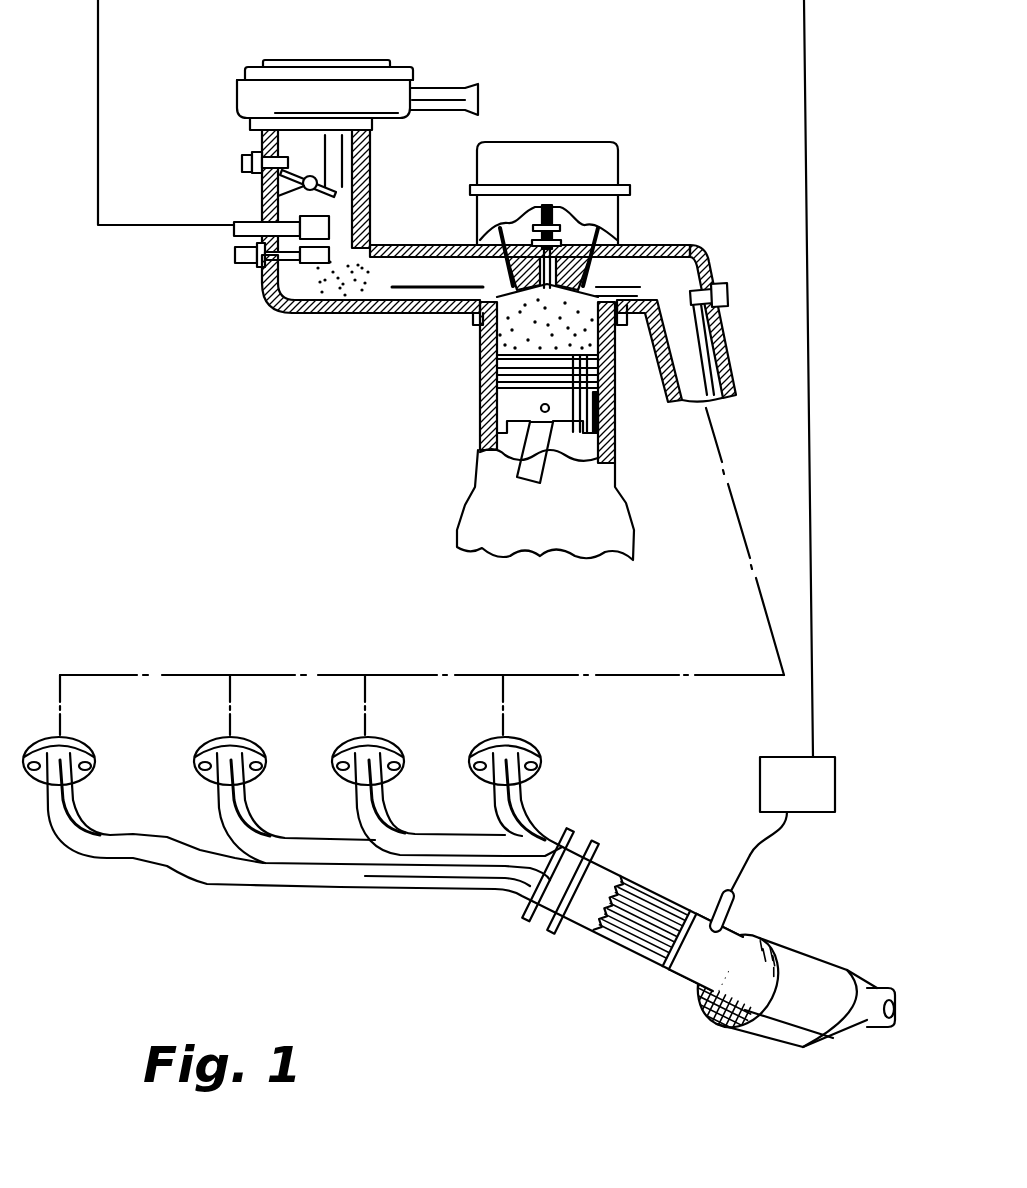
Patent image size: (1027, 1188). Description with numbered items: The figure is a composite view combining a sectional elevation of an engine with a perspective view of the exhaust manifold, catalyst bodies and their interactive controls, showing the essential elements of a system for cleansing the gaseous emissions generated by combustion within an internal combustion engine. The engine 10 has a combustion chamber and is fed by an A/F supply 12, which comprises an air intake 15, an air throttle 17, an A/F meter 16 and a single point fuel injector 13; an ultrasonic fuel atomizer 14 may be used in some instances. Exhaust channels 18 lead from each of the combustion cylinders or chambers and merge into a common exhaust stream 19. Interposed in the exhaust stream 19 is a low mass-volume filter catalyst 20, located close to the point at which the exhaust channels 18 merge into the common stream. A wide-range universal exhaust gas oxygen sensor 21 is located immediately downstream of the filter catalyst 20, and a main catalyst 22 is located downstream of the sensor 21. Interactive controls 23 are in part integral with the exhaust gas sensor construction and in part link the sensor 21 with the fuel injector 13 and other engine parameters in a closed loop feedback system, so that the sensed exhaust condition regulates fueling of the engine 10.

The engine 10 is at (448, 356).
The A/F supply 12 is at (388, 196).
The single point fuel injector 13 is at (262, 210).
The ultrasonic fuel atomizer 14 is at (305, 268).
The air intake 15 is at (327, 100).
The A/F meter 16 is at (243, 160).
The air throttle 17 is at (278, 204).
The exhaust channels 18 is at (682, 248).
The common exhaust stream 19 is at (513, 897).
The low mass-volume filter catalyst 20 is at (655, 955).
The wide-range universal exhaust gas oxygen (UEGO) sensor 21 is at (733, 914).
The main catalyst 22 is at (800, 977).
The interactive controls 23 is at (793, 806).